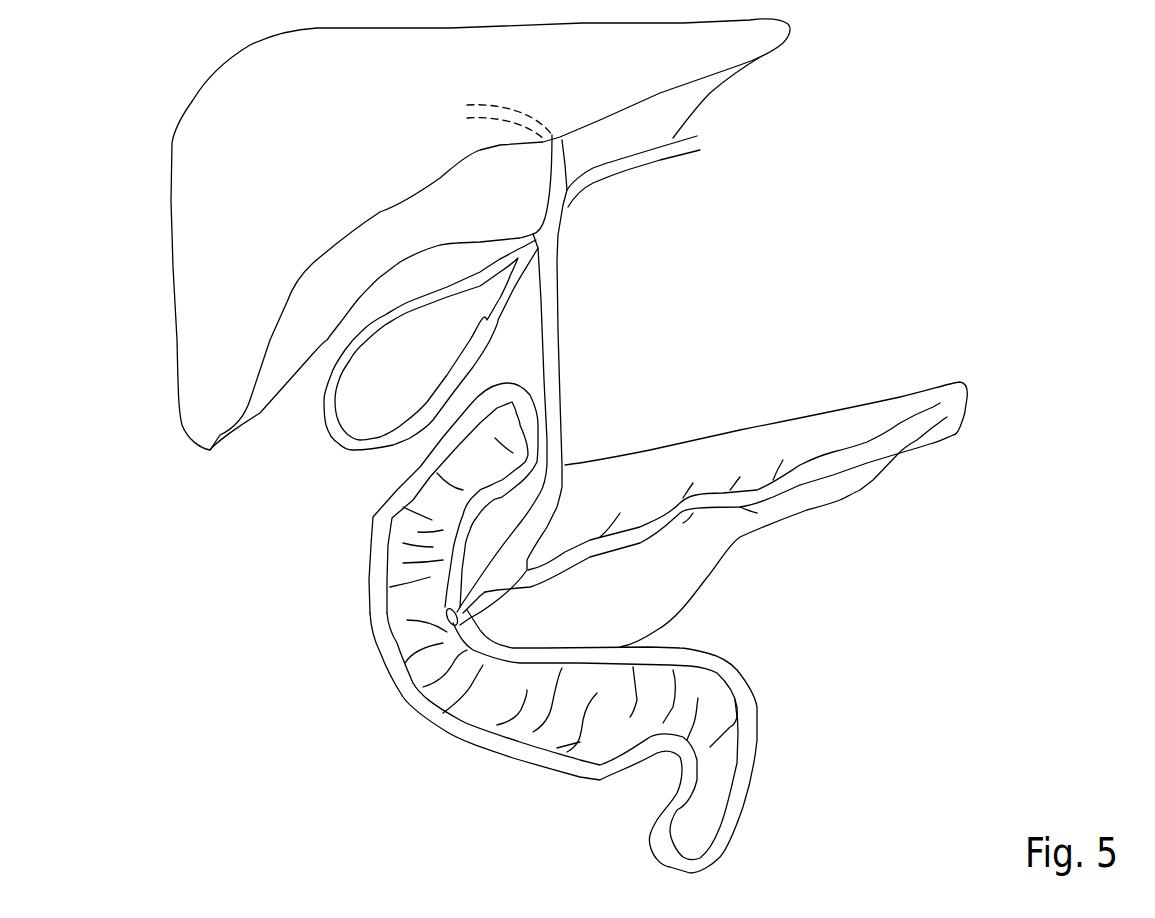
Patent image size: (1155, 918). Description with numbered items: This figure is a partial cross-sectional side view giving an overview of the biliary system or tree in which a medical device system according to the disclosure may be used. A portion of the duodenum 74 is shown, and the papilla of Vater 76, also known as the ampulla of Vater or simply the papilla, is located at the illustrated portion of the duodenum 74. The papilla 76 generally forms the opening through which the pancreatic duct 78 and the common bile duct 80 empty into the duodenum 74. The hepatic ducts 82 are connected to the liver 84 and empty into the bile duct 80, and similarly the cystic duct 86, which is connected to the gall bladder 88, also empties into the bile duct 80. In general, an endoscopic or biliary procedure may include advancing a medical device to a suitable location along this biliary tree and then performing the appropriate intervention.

The duodenum 74 is at (366, 697).
The papilla of Vater 76 is at (424, 604).
The pancreatic duct 78 is at (657, 527).
The common bile duct 80 is at (553, 380).
The hepatic ducts 82 is at (560, 195).
The liver 84 is at (220, 122).
The cystic duct 86 is at (518, 258).
The gall bladder 88 is at (360, 407).